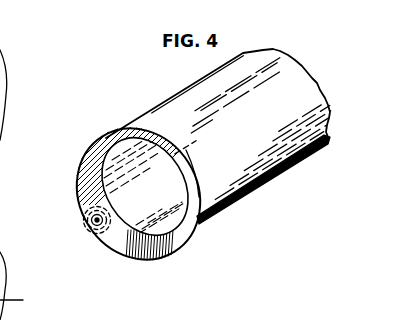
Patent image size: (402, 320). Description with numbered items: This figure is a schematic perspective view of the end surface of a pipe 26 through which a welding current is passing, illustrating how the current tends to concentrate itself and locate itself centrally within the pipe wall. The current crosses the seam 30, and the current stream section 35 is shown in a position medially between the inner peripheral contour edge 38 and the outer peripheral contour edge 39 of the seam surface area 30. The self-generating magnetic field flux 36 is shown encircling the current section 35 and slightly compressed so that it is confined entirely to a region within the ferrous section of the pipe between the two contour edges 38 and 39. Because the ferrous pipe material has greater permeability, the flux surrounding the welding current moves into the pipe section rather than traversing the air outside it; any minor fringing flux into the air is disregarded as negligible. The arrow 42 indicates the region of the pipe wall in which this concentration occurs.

The pipe 26 is at (206, 86).
The seam 30 is at (79, 181).
The current stream section 35 is at (82, 211).
The self-generating magnetic field flux 36 is at (102, 244).
The inner peripheral contour edge 38 is at (190, 160).
The outer peripheral contour edge 39 is at (206, 224).
The sleeve assembly 42 is at (72, 230).